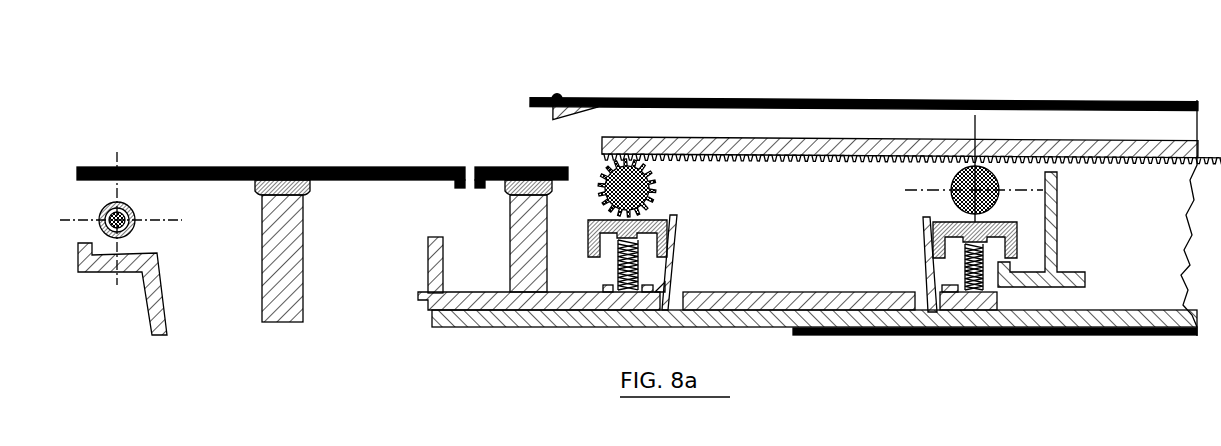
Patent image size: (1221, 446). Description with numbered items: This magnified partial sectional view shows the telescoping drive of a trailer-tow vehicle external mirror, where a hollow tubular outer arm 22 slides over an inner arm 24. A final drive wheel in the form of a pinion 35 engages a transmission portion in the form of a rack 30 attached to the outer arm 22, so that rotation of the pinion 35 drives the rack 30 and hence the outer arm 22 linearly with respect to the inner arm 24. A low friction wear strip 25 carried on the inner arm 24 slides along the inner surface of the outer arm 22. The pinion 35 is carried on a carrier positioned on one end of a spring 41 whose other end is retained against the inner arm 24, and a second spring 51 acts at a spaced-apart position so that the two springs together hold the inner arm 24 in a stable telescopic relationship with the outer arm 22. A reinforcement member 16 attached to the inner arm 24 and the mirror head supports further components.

The reinforcement member 16 is at (322, 223).
The outer arm 22 is at (742, 97).
The inner arm 24 is at (707, 307).
The wear strip 25 is at (814, 367).
The rack 30 is at (712, 150).
The pinion 35 is at (637, 160).
The spring 41 is at (652, 262).
The second spring 51 is at (949, 264).